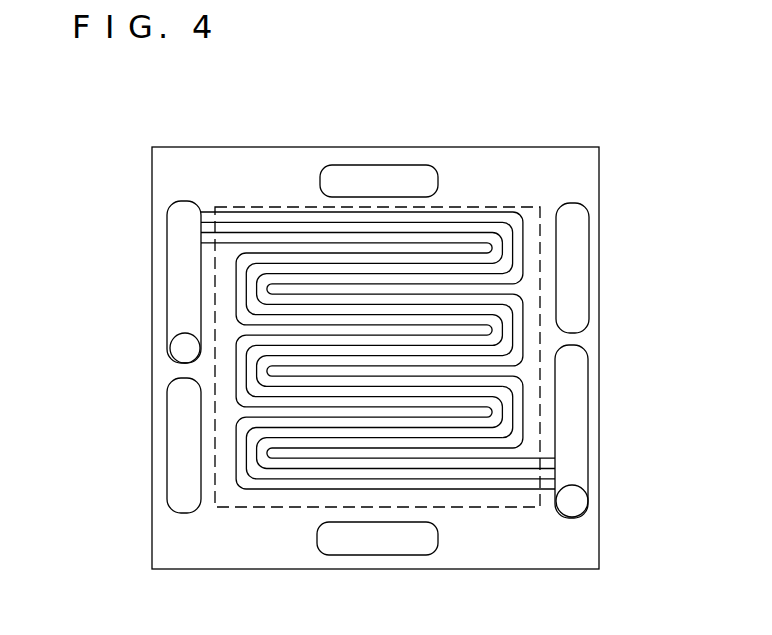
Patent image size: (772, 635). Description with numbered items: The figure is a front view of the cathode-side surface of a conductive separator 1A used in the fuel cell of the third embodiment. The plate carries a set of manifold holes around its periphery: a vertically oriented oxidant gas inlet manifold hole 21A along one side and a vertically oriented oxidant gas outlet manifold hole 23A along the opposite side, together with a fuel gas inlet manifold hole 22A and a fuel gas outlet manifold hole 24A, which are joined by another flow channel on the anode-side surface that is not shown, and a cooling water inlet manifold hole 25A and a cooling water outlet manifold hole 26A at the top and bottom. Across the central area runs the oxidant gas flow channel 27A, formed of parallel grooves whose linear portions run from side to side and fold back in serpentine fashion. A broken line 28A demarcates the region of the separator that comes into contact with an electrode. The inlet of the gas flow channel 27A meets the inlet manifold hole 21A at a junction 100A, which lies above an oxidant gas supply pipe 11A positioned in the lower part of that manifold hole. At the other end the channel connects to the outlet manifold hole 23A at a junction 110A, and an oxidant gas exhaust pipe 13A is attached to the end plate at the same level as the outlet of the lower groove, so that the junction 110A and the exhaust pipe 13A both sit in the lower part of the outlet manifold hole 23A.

The separator 1A is at (537, 147).
The oxidant gas supply pipe 11A is at (173, 347).
The oxidant gas exhaust pipe 13A is at (573, 500).
The inlet manifold hole 21A is at (168, 237).
The fuel gas inlet manifold hole 22A is at (589, 250).
The outlet manifold hole 23A is at (599, 430).
The fuel gas outlet manifold hole 24A is at (167, 467).
The cooling water inlet manifold hole 25A is at (377, 165).
The cooling water outlet manifold hole 26A is at (377, 555).
The oxidant gas flow channel 27A is at (302, 212).
The broken line 28A is at (540, 367).
The junction 100A is at (195, 237).
The junction of the gas flow channel 110A is at (558, 487).